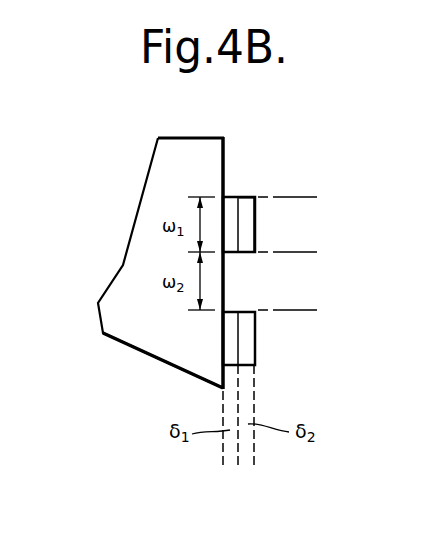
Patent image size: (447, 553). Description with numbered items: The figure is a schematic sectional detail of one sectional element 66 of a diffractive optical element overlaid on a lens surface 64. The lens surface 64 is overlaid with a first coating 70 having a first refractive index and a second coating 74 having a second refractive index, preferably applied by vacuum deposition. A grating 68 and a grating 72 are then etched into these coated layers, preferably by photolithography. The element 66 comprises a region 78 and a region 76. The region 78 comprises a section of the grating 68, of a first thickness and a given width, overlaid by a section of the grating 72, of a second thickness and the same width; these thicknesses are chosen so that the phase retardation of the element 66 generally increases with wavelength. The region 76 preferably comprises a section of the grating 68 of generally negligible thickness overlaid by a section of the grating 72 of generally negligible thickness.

The surface 64 is at (231, 147).
The sectional element 66 is at (128, 191).
The grating 68 is at (225, 476).
The first coating 70 is at (231, 197).
The grating 72 is at (252, 477).
The second coating 74 is at (256, 214).
The region 76 is at (245, 284).
The region 78 is at (250, 237).